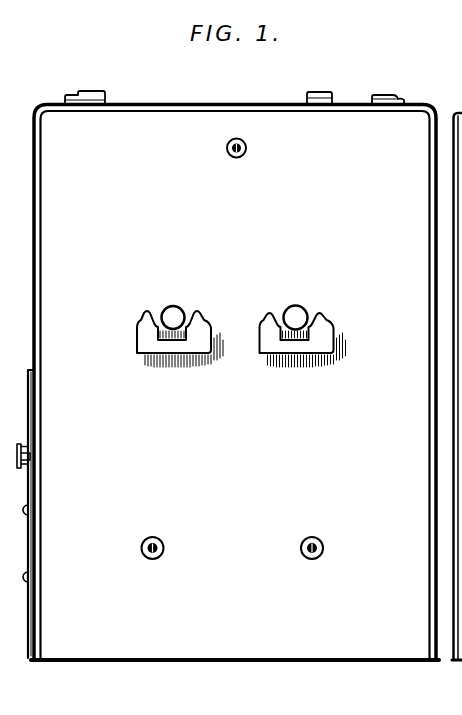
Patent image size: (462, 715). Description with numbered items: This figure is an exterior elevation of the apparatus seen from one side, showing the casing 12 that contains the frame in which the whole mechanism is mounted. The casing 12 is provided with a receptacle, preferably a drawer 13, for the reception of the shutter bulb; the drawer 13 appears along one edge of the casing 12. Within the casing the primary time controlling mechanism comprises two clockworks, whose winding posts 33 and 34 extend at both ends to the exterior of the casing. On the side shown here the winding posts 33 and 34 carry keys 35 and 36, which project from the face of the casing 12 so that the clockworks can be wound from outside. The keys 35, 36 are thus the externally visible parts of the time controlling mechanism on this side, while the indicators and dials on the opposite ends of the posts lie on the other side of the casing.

The casing 12 is at (405, 653).
The drawer 13 is at (37, 535).
The winding post 33 is at (174, 311).
The winding post 34 is at (306, 314).
The key 35 is at (228, 372).
The key 36 is at (303, 353).